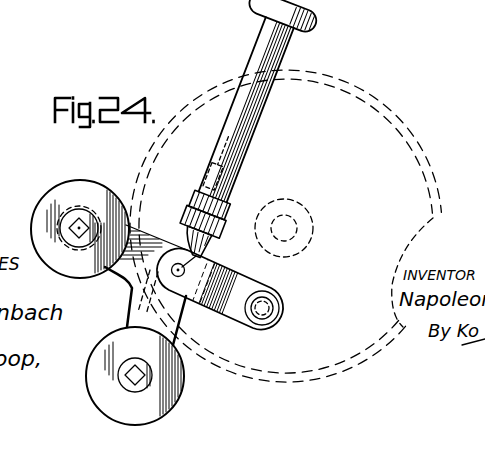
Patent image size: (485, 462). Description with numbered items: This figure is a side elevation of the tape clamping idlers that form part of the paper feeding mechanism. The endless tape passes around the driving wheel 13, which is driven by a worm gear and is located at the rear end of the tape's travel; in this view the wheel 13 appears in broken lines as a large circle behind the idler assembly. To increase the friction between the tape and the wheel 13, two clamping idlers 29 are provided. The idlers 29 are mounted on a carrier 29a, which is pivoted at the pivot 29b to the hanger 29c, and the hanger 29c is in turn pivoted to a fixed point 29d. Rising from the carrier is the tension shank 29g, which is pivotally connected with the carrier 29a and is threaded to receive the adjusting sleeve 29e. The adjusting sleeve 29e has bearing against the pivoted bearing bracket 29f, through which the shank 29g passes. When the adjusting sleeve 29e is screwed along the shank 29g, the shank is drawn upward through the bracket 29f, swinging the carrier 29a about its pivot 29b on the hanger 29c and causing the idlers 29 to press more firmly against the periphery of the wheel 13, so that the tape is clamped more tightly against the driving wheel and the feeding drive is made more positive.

The driving wheel 13 is at (407, 133).
The clamping idlers 29 is at (88, 187).
The carrier 29a is at (136, 301).
The pivot 29b is at (181, 268).
The hanger 29c is at (253, 279).
The fixed point 29d is at (264, 307).
The adjusting sleeve 29e is at (240, 105).
The pivoted bearing bracket 29f is at (216, 181).
The tension shank 29g is at (187, 230).